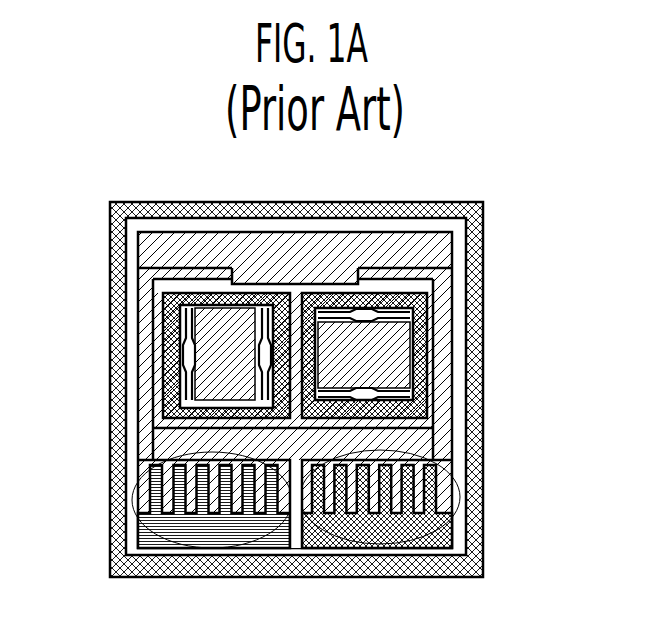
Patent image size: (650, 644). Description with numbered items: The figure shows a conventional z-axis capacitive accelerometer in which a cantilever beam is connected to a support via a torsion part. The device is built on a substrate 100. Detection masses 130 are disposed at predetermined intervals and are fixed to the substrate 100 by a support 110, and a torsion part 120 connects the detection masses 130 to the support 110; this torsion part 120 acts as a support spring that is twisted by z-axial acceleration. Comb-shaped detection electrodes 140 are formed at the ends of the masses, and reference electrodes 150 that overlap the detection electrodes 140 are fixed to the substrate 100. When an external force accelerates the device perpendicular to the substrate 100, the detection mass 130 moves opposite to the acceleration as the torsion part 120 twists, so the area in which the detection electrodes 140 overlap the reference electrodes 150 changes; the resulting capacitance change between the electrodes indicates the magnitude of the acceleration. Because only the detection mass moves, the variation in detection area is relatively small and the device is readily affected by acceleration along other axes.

The substrate 100 is at (127, 208).
The support 110 is at (143, 247).
The torsion part 120 is at (161, 275).
The detection masses 130 is at (435, 437).
The detection electrodes 140 is at (145, 468).
The reference electrodes 150 is at (145, 535).